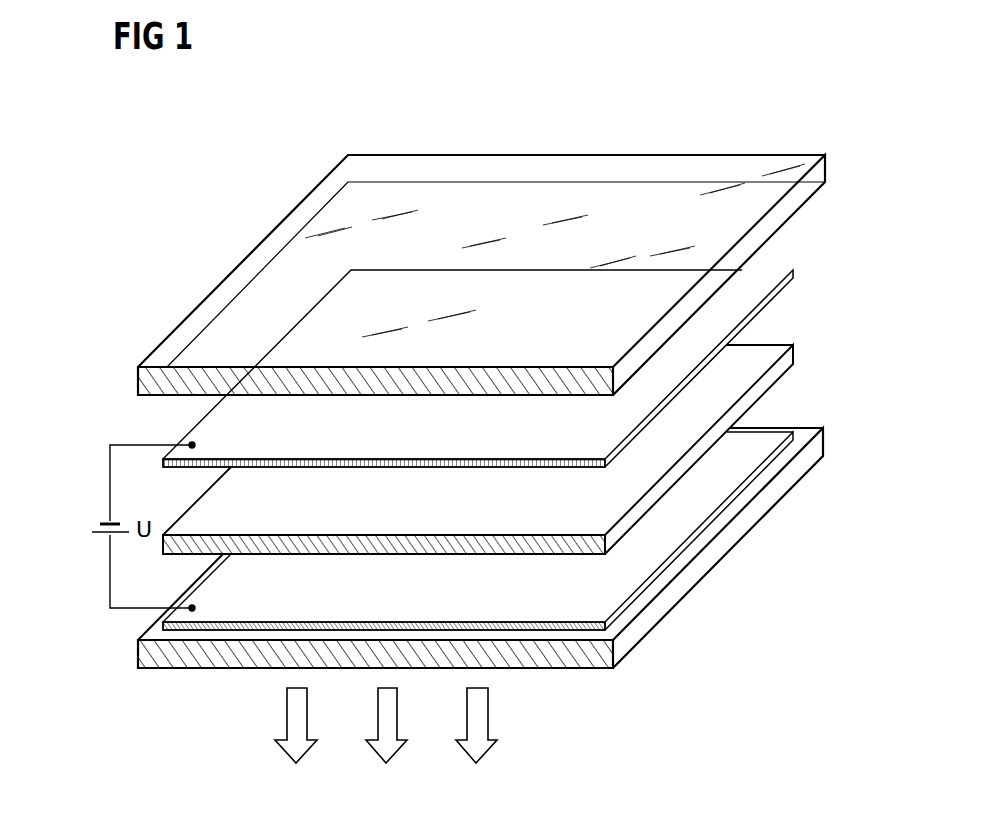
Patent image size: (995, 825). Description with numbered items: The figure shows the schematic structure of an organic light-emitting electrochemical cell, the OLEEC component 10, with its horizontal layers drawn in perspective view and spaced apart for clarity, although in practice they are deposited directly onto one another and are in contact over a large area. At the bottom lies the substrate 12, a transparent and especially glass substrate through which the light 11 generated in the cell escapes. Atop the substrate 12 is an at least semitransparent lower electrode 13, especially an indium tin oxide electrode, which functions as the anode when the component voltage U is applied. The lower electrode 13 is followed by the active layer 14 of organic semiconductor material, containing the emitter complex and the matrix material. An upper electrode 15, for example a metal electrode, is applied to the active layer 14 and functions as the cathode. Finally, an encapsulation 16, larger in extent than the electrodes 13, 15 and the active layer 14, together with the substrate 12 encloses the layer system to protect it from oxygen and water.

The OLEEC component 10 is at (274, 191).
The light 11 is at (489, 718).
The substrate 12 is at (757, 515).
The lower electrode 13 is at (762, 440).
The active layer 14 is at (763, 353).
The upper electrode 15 is at (763, 278).
The encapsulation 16 is at (765, 162).